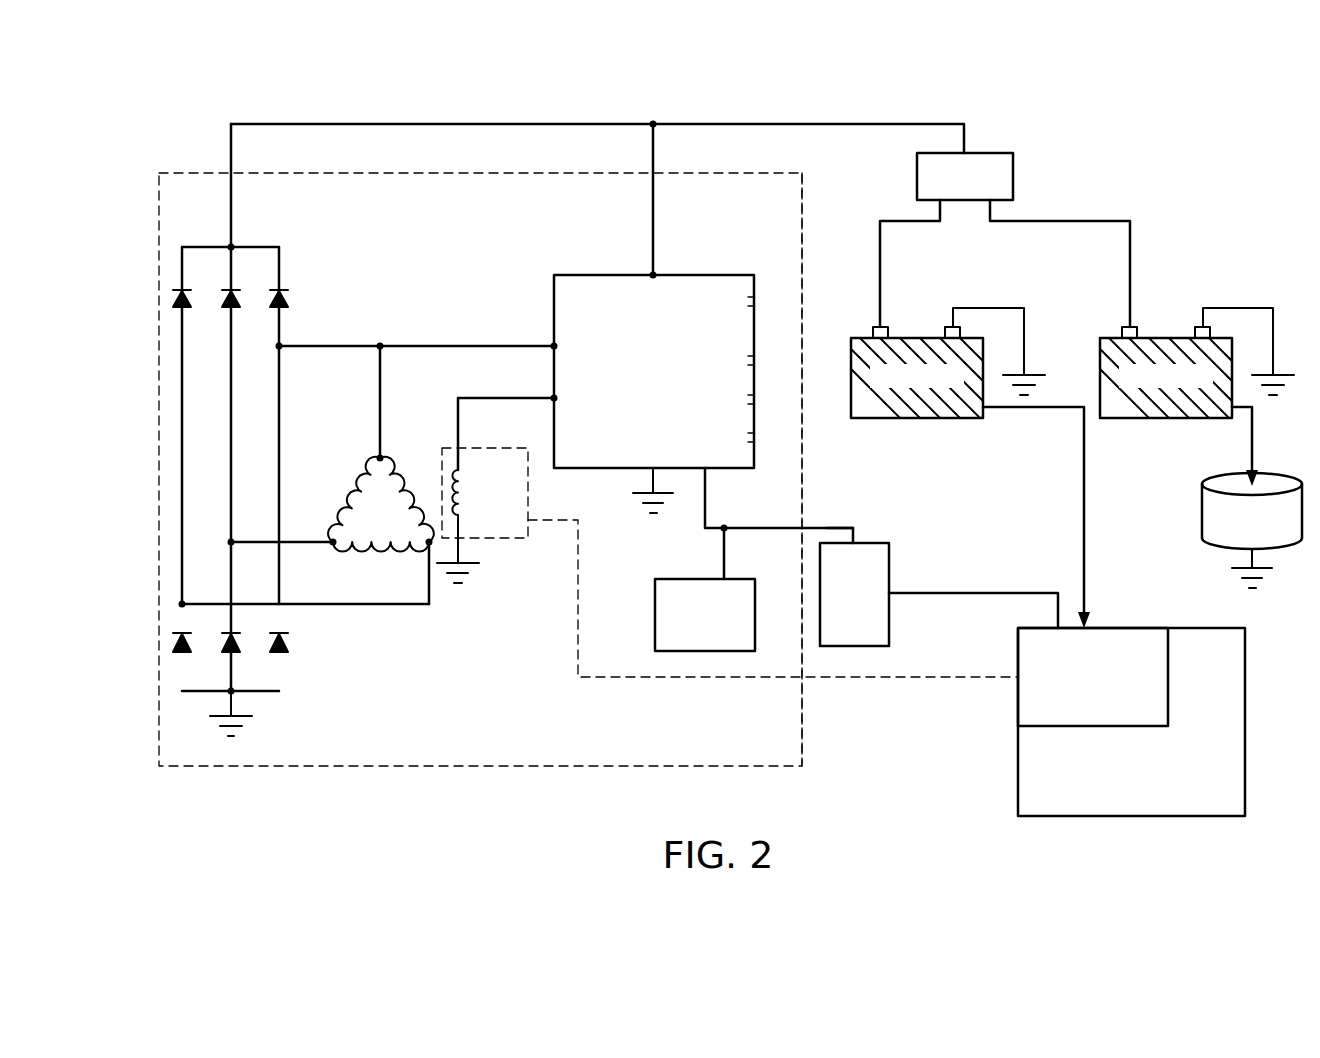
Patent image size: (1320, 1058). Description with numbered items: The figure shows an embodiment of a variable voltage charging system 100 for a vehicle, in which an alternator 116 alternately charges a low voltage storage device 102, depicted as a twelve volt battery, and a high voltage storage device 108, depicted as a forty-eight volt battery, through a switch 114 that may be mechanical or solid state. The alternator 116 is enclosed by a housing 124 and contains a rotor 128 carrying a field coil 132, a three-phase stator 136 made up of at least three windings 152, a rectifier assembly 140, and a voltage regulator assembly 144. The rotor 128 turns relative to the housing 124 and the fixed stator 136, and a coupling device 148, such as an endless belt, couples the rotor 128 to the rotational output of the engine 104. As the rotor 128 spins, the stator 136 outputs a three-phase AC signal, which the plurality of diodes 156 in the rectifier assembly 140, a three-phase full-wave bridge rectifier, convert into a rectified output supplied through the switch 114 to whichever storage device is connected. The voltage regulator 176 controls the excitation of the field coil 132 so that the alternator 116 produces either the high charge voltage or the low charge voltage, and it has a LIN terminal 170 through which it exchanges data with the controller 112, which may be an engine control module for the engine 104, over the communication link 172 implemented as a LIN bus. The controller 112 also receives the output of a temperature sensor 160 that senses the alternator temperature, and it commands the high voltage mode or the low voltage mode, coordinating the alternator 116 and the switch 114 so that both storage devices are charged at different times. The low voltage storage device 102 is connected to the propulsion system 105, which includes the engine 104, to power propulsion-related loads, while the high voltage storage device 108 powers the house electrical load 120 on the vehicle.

The variable voltage charging system 100 is at (925, 102).
The low voltage storage device 102 is at (851, 368).
The engine 104 is at (1168, 700).
The propulsion system 105 is at (1245, 722).
The high voltage storage device 108 is at (1098, 368).
The controller 112 is at (889, 620).
The switch 114 is at (1013, 178).
The alternator 116 is at (810, 237).
The electrical load 120 is at (1222, 542).
The housing 124 is at (193, 172).
The rotor 128 is at (530, 492).
The field coil 132 is at (460, 515).
The stator 136 is at (350, 466).
The rectifier assembly 140 is at (292, 264).
The voltage regulator assembly 144 is at (632, 513).
The coupling device 148 is at (622, 677).
The windings 152 is at (352, 482).
The diodes 156 is at (279, 307).
The temperature sensor 160 is at (705, 651).
The LIN terminal 170 is at (705, 474).
The communication link 172 is at (826, 527).
The voltage regulator 176 is at (615, 273).